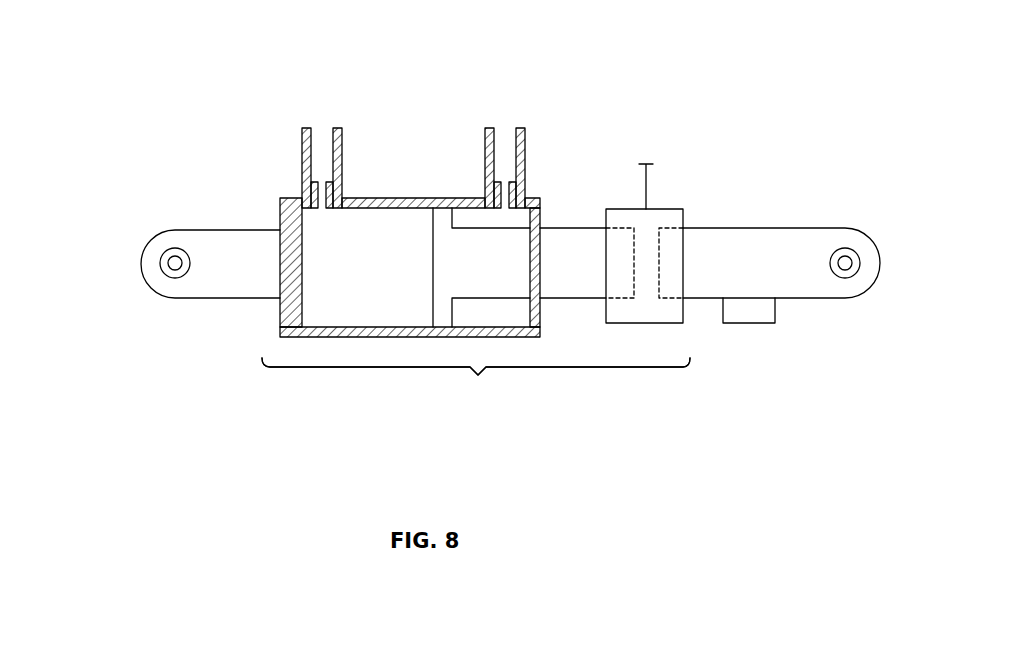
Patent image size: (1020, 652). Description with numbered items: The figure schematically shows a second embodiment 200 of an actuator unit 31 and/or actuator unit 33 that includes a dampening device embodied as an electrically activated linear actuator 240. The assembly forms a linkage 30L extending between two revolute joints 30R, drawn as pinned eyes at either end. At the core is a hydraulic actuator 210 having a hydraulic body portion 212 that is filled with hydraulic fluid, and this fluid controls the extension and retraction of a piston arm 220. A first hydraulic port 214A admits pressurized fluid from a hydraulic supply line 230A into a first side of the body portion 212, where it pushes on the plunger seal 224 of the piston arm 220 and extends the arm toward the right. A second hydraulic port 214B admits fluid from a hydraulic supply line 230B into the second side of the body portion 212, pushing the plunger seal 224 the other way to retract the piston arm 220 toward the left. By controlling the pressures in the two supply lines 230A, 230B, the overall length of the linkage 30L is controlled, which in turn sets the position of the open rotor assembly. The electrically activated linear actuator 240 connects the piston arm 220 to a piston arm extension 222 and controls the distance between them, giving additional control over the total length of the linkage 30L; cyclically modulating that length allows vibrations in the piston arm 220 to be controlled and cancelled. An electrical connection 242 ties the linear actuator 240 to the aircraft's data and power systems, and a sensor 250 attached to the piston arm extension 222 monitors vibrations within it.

The second embodiment 200 is at (100, 70).
The hydraulic actuator 210 is at (383, 198).
The hydraulic body portion 212 is at (278, 325).
The first hydraulic port 214A is at (306, 193).
The second hydraulic port 214B is at (521, 190).
The piston arm 220 is at (565, 228).
The piston arm extension 222 is at (777, 228).
The plunger seal 224 is at (433, 283).
The hydraulic supply line 230A is at (302, 145).
The hydraulic supply line 230B is at (525, 145).
The electrically activated linear actuator 240 is at (683, 220).
The electrical connection 242 is at (648, 180).
The sensor 250 is at (745, 323).
The linkage 30L is at (220, 298).
The revolute joints 30R is at (172, 279).
The actuator unit 31 is at (476, 385).
The actuator unit 33 is at (476, 385).